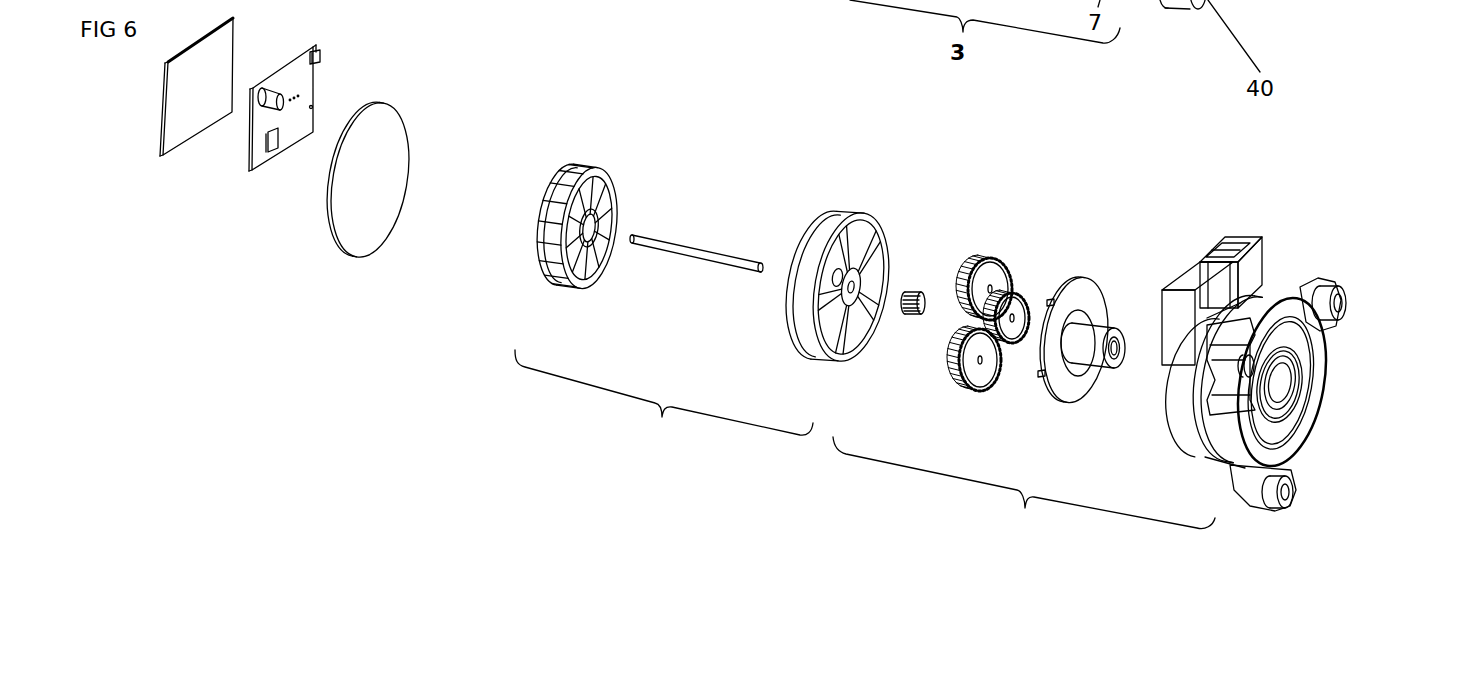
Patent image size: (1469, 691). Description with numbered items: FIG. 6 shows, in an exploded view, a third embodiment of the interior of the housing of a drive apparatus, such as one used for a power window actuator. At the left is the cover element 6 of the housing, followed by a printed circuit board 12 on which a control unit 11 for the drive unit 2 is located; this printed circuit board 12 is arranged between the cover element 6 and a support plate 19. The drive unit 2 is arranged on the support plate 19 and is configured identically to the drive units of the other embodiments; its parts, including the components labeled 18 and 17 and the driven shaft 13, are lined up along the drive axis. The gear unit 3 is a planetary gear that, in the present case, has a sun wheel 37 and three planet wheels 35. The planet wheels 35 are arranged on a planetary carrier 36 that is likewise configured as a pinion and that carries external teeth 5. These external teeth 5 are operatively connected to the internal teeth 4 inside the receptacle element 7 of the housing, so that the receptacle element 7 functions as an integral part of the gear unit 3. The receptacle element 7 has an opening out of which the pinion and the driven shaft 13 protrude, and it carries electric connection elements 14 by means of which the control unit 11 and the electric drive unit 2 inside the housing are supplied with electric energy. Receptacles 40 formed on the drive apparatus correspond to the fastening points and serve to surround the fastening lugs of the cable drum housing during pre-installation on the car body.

The drive unit 2 is at (664, 404).
The gear unit 3 is at (1024, 490).
The internal teeth 4 is at (1260, 370).
The external teeth 5 is at (1075, 351).
The cover element 6 is at (175, 157).
The receptacle element 7 is at (1208, 395).
The control unit 11 is at (262, 148).
The printed circuit board 12 is at (245, 188).
The driven shaft 13 is at (685, 278).
The electric connection elements 14 is at (1212, 252).
The rotor 17 is at (807, 363).
The stator 18 is at (548, 295).
The support plate 19 is at (330, 263).
The planet wheels 35 is at (958, 402).
The planetary carrier 36 is at (1067, 413).
The sun wheel 37 is at (900, 335).
The receptacles 40 is at (1340, 297).